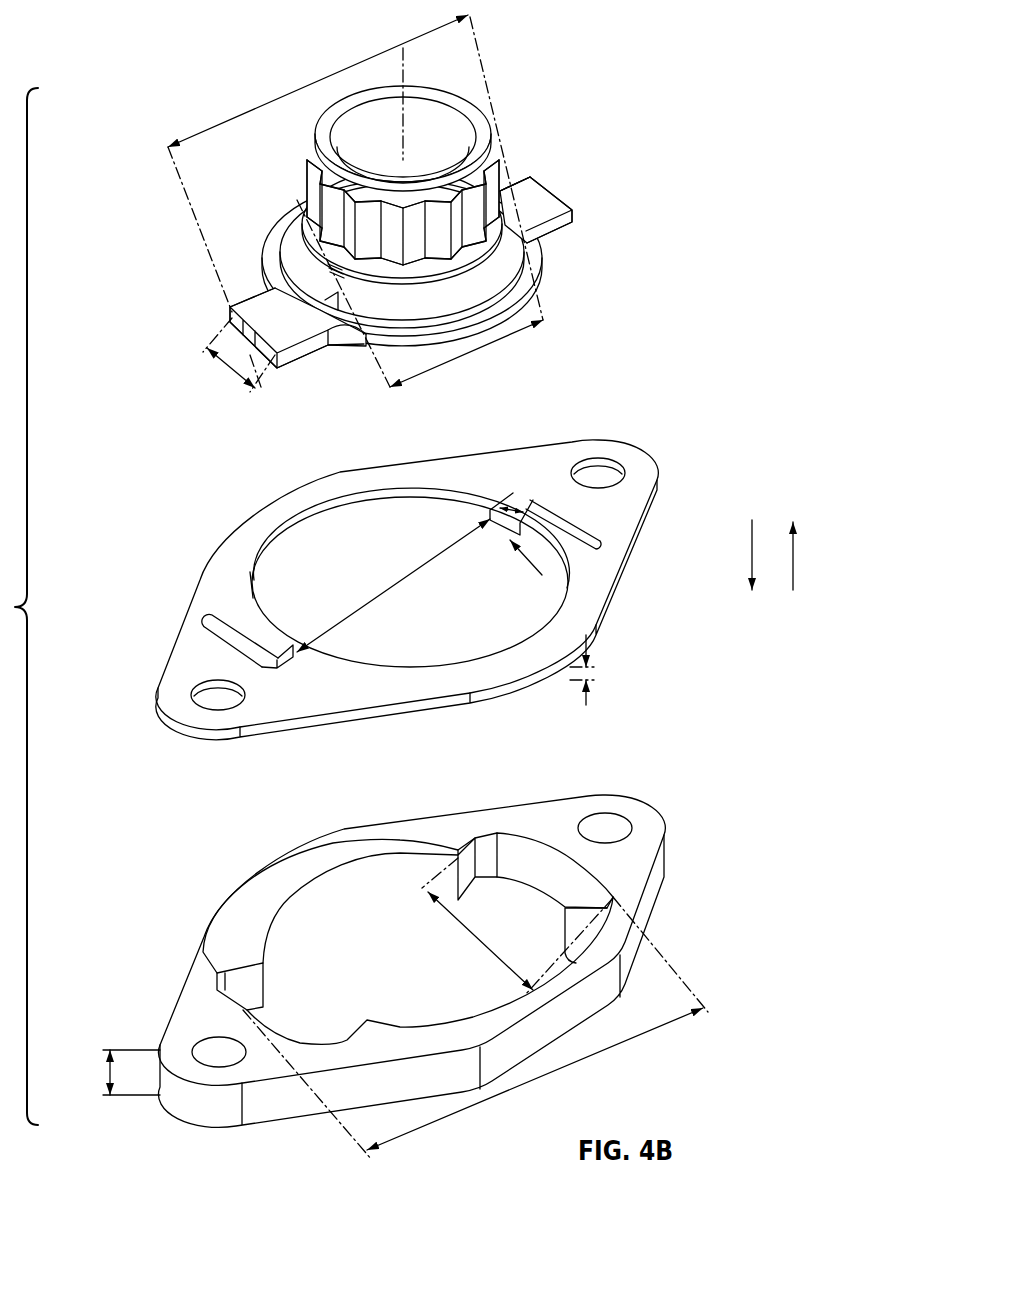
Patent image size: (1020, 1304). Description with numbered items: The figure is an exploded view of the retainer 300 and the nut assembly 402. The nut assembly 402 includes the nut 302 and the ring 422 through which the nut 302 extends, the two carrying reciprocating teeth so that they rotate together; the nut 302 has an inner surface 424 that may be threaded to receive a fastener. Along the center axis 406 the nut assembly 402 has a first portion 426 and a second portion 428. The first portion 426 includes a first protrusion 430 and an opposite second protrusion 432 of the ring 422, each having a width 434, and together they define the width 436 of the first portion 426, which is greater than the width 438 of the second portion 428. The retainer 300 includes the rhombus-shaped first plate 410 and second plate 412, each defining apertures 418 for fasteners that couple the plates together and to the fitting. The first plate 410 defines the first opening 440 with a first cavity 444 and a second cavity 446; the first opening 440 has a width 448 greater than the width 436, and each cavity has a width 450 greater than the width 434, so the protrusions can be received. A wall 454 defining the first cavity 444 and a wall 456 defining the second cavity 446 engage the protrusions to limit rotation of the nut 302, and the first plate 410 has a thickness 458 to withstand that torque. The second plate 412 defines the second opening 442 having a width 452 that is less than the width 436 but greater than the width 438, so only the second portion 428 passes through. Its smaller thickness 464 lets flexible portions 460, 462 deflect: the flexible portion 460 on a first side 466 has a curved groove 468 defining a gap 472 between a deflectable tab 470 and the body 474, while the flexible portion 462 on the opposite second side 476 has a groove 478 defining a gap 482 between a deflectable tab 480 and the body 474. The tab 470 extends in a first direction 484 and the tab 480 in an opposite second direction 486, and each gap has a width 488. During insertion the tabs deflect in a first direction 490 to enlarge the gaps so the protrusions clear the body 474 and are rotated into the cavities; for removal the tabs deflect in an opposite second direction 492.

The retainer 300 is at (434, 587).
The nut 302 is at (353, 175).
The nut assembly 402 is at (417, 205).
The center axis 406 is at (410, 72).
The first plate 410 is at (371, 957).
The second plate 412 is at (404, 574).
The apertures 418 is at (602, 478).
The ring 422 is at (302, 190).
The inner surface 424 is at (360, 155).
The first portion 426 is at (592, 213).
The second portion 428 is at (520, 186).
The first protrusion 430 is at (275, 322).
The second protrusion 432 is at (610, 178).
The width 434 is at (250, 386).
The width 436 is at (305, 92).
The width 438 is at (465, 353).
The first opening 440 is at (350, 935).
The second opening 442 is at (368, 528).
The first cavity 444 is at (230, 940).
The second cavity 446 is at (533, 862).
The width 448 is at (533, 1086).
The width 450 is at (480, 948).
The width 452 is at (397, 585).
The wall 454 is at (247, 977).
The wall 456 is at (473, 857).
The thickness 458 is at (103, 1052).
The flexible portion 460 is at (220, 650).
The flexible portion 462 is at (620, 578).
The thickness 464 is at (592, 700).
The first side 466 is at (330, 728).
The groove 468 is at (223, 640).
The deflectable tab 470 is at (253, 645).
The gap 472 is at (274, 684).
The body 474 is at (446, 678).
The second side 476 is at (632, 440).
The groove 478 is at (575, 545).
The deflectable tab 480 is at (605, 528).
The gap 482 is at (477, 498).
The first direction 484 is at (250, 600).
The second direction 486 is at (542, 575).
The width 488 is at (535, 492).
The first direction 490 is at (752, 540).
The second direction 492 is at (793, 575).